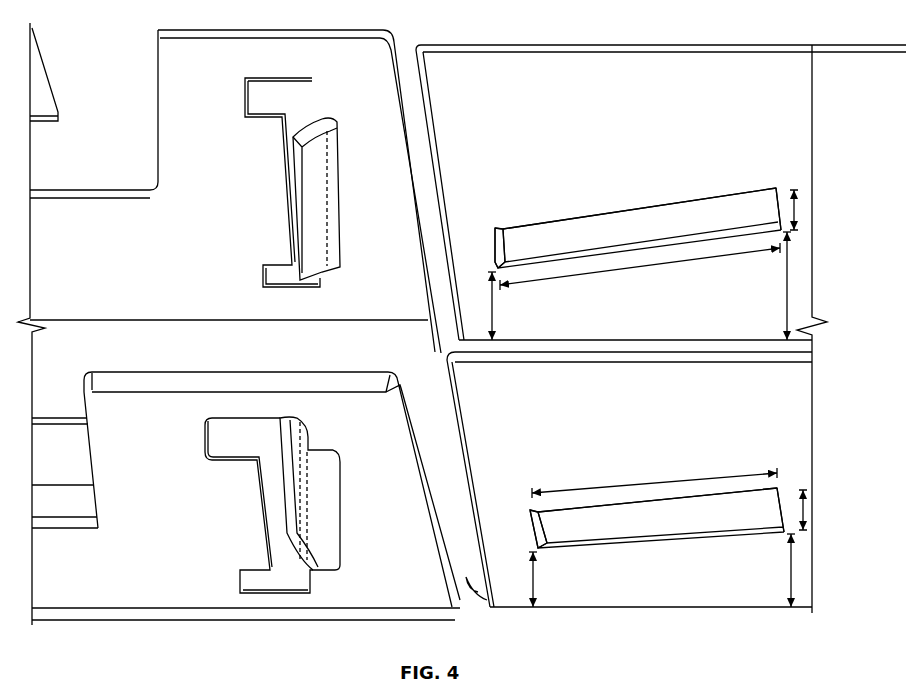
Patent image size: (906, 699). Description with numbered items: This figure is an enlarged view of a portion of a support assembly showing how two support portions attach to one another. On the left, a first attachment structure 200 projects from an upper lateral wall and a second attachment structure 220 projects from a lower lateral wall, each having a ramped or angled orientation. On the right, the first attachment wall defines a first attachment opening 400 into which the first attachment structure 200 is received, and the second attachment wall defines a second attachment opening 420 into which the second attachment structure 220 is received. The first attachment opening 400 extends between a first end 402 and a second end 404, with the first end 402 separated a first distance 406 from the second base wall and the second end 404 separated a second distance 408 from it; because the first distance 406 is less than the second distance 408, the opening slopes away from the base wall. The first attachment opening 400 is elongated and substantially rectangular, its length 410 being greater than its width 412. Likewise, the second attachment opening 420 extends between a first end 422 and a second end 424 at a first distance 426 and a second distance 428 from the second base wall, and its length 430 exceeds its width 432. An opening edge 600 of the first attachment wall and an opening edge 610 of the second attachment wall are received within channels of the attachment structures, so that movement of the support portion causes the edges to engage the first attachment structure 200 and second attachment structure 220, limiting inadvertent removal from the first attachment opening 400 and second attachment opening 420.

The first attachment structure 200 is at (317, 202).
The second attachment structure 220 is at (297, 512).
The first attachment opening 400 is at (623, 222).
The first end 402 is at (497, 230).
The second end 404 is at (776, 188).
The first distance 406 is at (492, 305).
The second distance 408 is at (787, 272).
The length 410 is at (658, 268).
The width 412 is at (797, 212).
The second attachment opening 420 is at (643, 508).
The first end 422 is at (530, 510).
The second end 424 is at (782, 490).
The first distance 426 is at (535, 570).
The second distance 428 is at (793, 572).
The length 430 is at (665, 483).
The width 432 is at (805, 510).
The opening edge 600 is at (680, 200).
The opening edge 610 is at (710, 497).